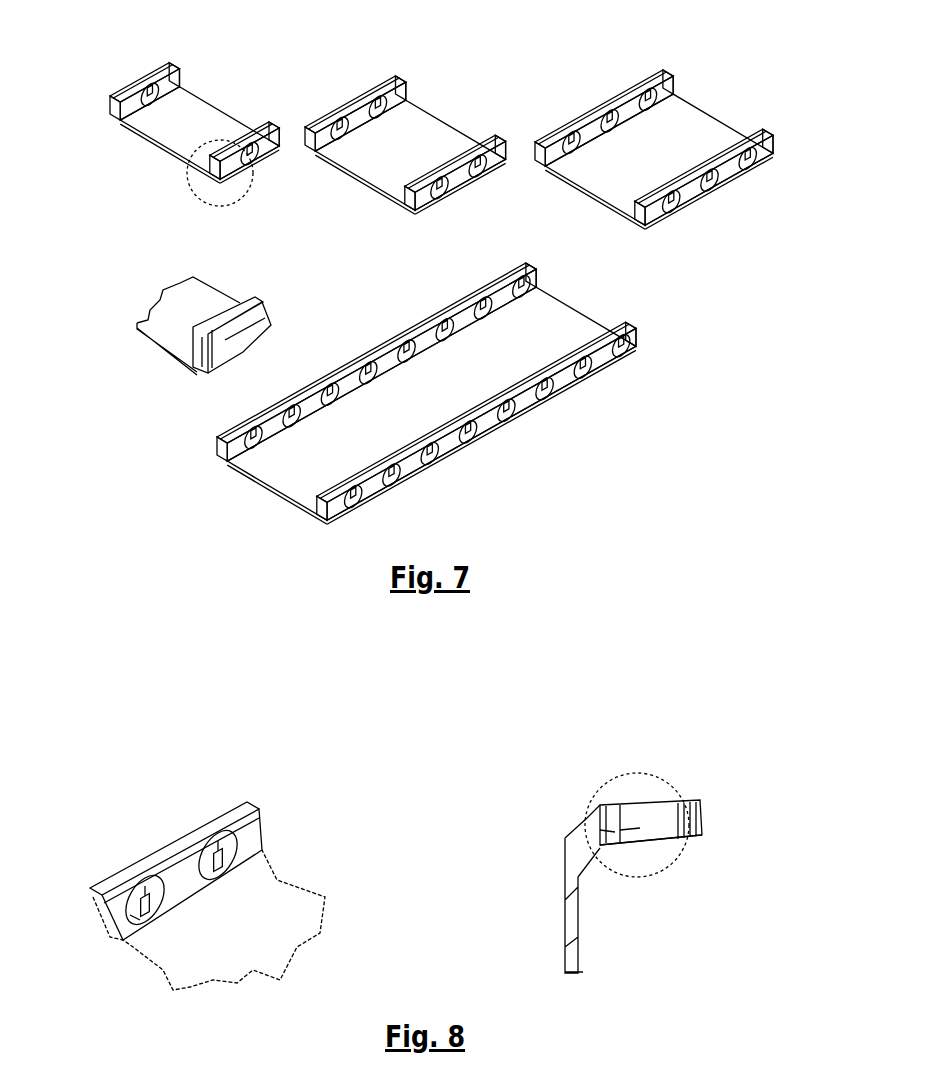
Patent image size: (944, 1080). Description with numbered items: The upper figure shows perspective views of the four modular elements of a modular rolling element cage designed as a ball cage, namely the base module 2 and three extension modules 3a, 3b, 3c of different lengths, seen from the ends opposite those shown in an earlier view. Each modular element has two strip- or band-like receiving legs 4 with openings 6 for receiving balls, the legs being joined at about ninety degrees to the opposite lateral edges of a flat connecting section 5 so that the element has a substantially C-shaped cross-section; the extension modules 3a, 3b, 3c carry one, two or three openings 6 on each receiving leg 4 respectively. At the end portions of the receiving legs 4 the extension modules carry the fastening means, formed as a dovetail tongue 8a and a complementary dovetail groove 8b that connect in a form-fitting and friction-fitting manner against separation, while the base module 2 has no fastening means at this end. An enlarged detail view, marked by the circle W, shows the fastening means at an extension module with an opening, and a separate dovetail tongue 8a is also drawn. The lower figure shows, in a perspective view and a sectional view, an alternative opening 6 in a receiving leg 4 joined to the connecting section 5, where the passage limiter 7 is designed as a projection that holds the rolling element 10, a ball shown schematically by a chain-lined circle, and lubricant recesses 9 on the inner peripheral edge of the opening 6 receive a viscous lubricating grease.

In FIG. 7, the base module 2 is at (514, 451).
In FIG. 7, the extension module 3a is at (191, 99).
In FIG. 7, the extension module 3b is at (437, 99).
In FIG. 7, the extension module 3c is at (690, 93).
In FIG. 7, the dovetail tongue 8a is at (652, 214).
In FIG. 7, the dovetail groove 8b is at (768, 152).
In FIG. 7, the detail view circle W is at (204, 173).
In FIG. 8, the receiving leg 4 is at (183, 870).
In FIG. 8, the connecting section 5 is at (220, 953).
In FIG. 8, the opening 6 is at (213, 850).
In FIG. 8, the passage limiter 7 is at (228, 882).
In FIG. 8, the lubricant recess 9 is at (153, 897).
In FIG. 8, the rolling element 10 is at (647, 780).